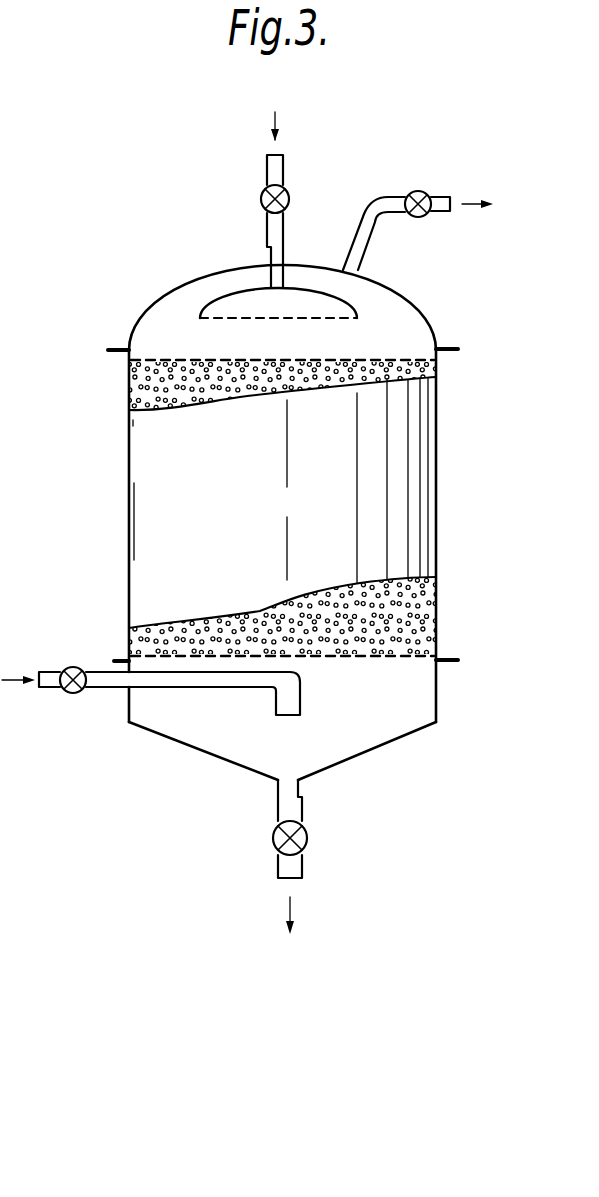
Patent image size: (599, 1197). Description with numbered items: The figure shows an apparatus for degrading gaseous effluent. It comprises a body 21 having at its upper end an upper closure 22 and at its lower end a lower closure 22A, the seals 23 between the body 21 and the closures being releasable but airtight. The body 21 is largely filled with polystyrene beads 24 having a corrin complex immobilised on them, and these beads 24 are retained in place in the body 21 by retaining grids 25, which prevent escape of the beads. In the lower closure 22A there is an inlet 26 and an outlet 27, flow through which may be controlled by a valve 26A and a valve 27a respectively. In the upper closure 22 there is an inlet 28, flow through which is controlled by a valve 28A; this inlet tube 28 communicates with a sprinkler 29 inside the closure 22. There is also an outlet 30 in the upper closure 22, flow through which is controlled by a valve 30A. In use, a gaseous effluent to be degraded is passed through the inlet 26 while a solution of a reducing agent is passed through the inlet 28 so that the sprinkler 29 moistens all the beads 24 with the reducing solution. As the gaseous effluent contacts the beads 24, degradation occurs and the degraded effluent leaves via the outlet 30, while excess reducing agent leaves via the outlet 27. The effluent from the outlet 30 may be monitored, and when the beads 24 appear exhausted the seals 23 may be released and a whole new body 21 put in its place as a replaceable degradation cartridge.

The body 21 is at (148, 490).
The upper closure 22 is at (162, 307).
The lower closure 22A is at (383, 732).
The seal 23 is at (113, 357).
The polystyrene beads 24 is at (128, 402).
The retaining grid 25 is at (387, 357).
The inlet 26 is at (100, 688).
The valve 26A is at (75, 667).
The outlet 27 is at (280, 812).
The valve 27a is at (298, 838).
The inlet 28 is at (268, 232).
The valve 28A is at (285, 197).
The sprinkler 29 is at (225, 295).
The outlet 30 is at (367, 233).
The valve 30A is at (418, 191).